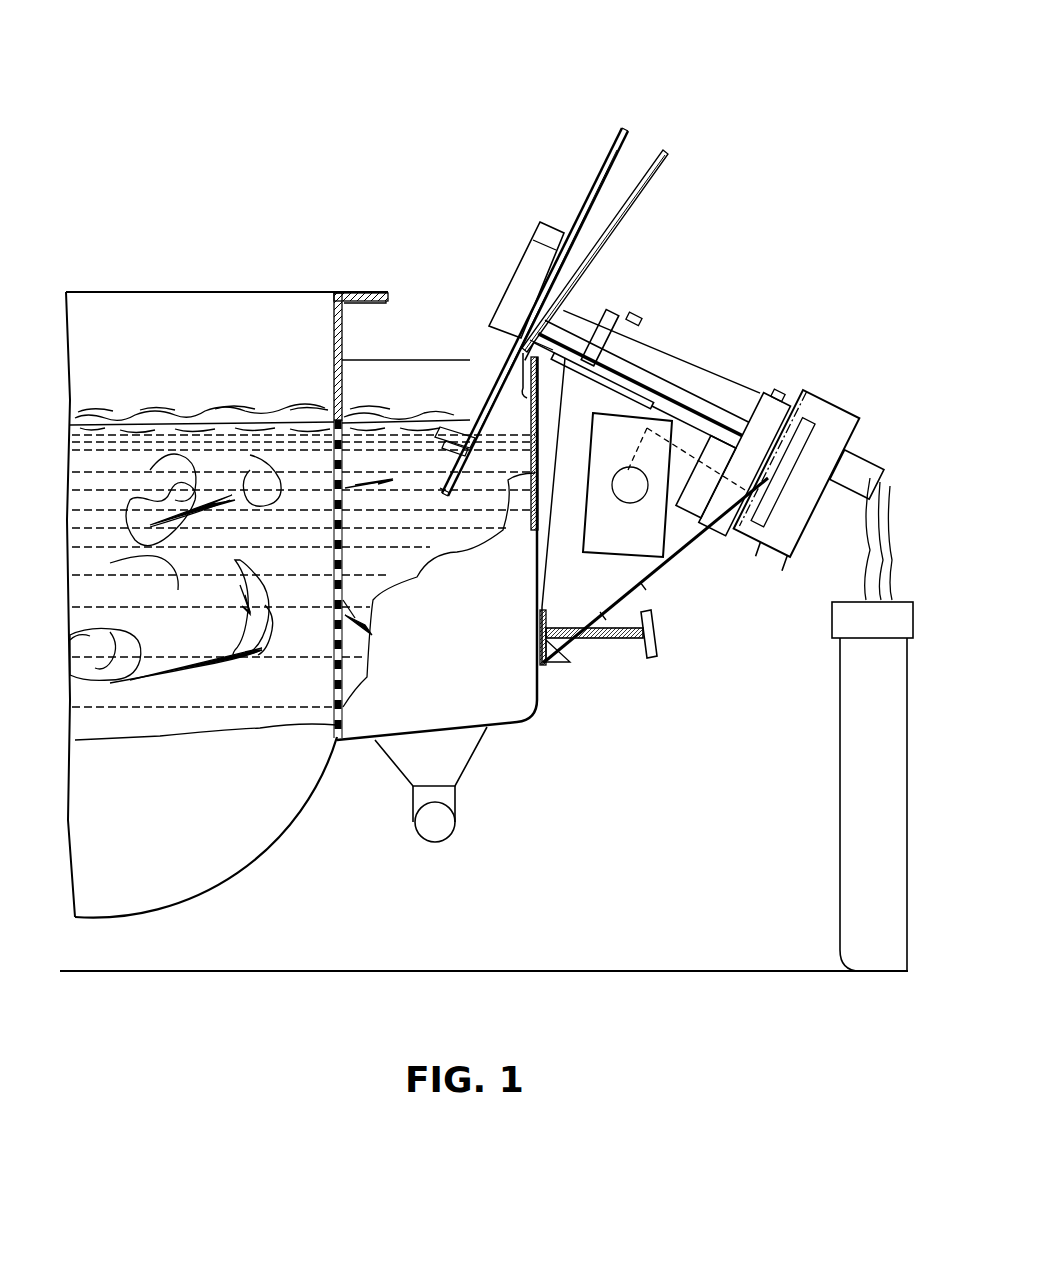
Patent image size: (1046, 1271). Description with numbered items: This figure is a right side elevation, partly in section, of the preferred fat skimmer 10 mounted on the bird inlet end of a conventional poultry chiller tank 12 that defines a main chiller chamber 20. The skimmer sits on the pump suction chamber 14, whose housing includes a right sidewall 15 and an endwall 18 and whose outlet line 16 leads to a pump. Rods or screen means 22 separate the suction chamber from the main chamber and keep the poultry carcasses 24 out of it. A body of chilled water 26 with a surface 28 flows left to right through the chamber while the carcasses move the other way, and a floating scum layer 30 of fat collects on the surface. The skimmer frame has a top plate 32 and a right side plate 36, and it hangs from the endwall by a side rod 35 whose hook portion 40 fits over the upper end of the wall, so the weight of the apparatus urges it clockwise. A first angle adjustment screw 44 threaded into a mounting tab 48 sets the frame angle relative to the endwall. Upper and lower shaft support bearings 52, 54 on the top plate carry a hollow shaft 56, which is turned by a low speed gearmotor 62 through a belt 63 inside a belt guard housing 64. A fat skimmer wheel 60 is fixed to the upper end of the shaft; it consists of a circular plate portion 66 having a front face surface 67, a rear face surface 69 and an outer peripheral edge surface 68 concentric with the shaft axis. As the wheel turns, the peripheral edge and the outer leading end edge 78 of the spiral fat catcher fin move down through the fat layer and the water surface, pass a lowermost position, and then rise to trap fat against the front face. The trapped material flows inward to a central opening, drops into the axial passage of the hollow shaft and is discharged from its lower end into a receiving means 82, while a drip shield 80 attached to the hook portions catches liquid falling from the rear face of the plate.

The fat skimmer 10 is at (735, 228).
The chiller tank 12 is at (335, 276).
The pump suction chamber 14 is at (388, 364).
The right sidewall 15 is at (470, 669).
The outlet line 16 is at (450, 822).
The endwall 18 is at (525, 478).
The main chiller chamber 20 is at (258, 300).
The rods or screen means 22 is at (110, 705).
The poultry carcasses 24 is at (195, 498).
The body of chilled water 26 is at (170, 733).
The surface 28 is at (166, 420).
The scum layer 30 is at (270, 418).
The top plate 32 is at (659, 353).
The support rod 35 is at (660, 575).
The right side plate 36 is at (580, 390).
The hook portion 40 is at (552, 418).
The first angle adjustment screw 44 is at (622, 632).
The mounting tab 48 is at (568, 652).
The upper shaft support bearing 52 is at (652, 332).
The lower shaft support bearing 54 is at (786, 437).
The hollow shaft 56 is at (722, 403).
The fat skimmer wheel 60 is at (652, 138).
The gearmotor 62 is at (725, 508).
The belt 63 is at (826, 456).
The belt guard housing 64 is at (782, 580).
The circular plate portion 66 is at (588, 215).
The front face surface 67 is at (598, 172).
The outer peripheral edge surface 68 is at (624, 132).
The rear face surface 69 is at (634, 195).
The outer leading end edge 78 is at (438, 445).
The drip shield 80 is at (610, 237).
The receiving means 82 is at (850, 767).